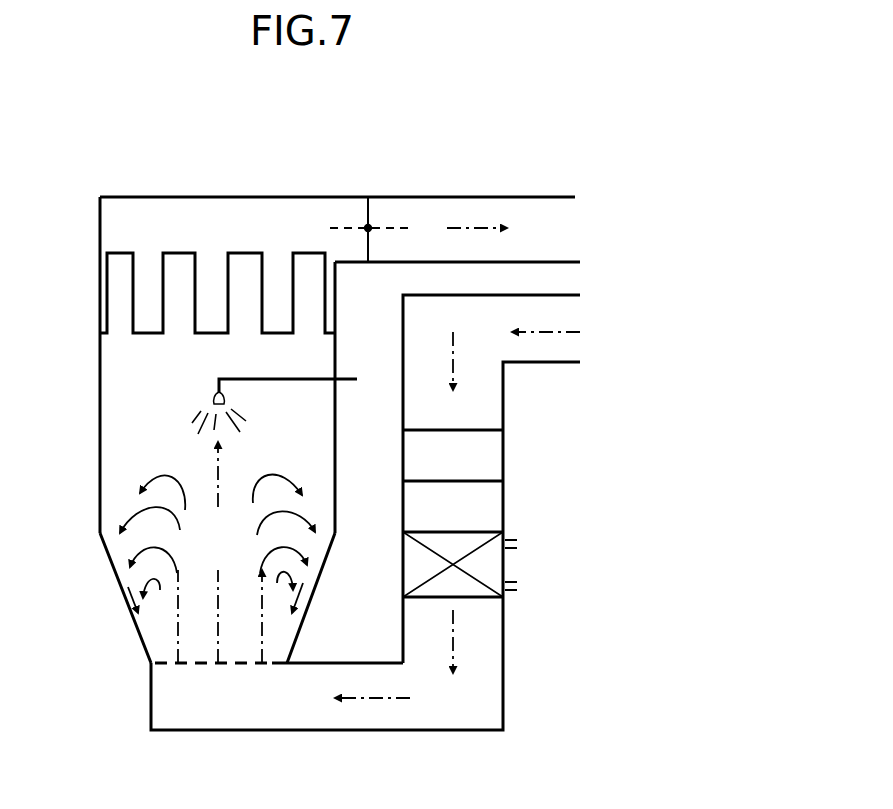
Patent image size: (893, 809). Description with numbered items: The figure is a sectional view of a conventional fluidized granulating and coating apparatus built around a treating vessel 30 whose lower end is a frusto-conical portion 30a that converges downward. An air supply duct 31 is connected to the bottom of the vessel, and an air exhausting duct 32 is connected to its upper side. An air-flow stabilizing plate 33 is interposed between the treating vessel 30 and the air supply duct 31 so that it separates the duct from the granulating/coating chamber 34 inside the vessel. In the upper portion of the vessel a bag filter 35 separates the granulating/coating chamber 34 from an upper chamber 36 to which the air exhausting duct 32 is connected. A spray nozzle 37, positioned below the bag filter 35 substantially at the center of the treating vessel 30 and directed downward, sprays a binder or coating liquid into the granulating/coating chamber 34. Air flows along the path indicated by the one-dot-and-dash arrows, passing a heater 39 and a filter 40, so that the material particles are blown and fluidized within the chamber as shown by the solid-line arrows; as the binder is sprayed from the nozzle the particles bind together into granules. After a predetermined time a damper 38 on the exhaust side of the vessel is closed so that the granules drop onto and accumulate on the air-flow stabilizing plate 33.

The treating vessel 30 is at (92, 460).
The frusto-conical portion 30a is at (122, 598).
The air supply duct 31 is at (283, 732).
The air exhausting duct 32 is at (422, 205).
The air-flow stabilizing plate 33 is at (190, 667).
The granulating/coating chamber 34 is at (212, 467).
The bag filter 35 is at (133, 283).
The chamber 36 is at (194, 208).
The spray nozzle 37 is at (214, 394).
The damper 38 is at (367, 210).
The heater 39 is at (483, 535).
The filter 40 is at (497, 459).